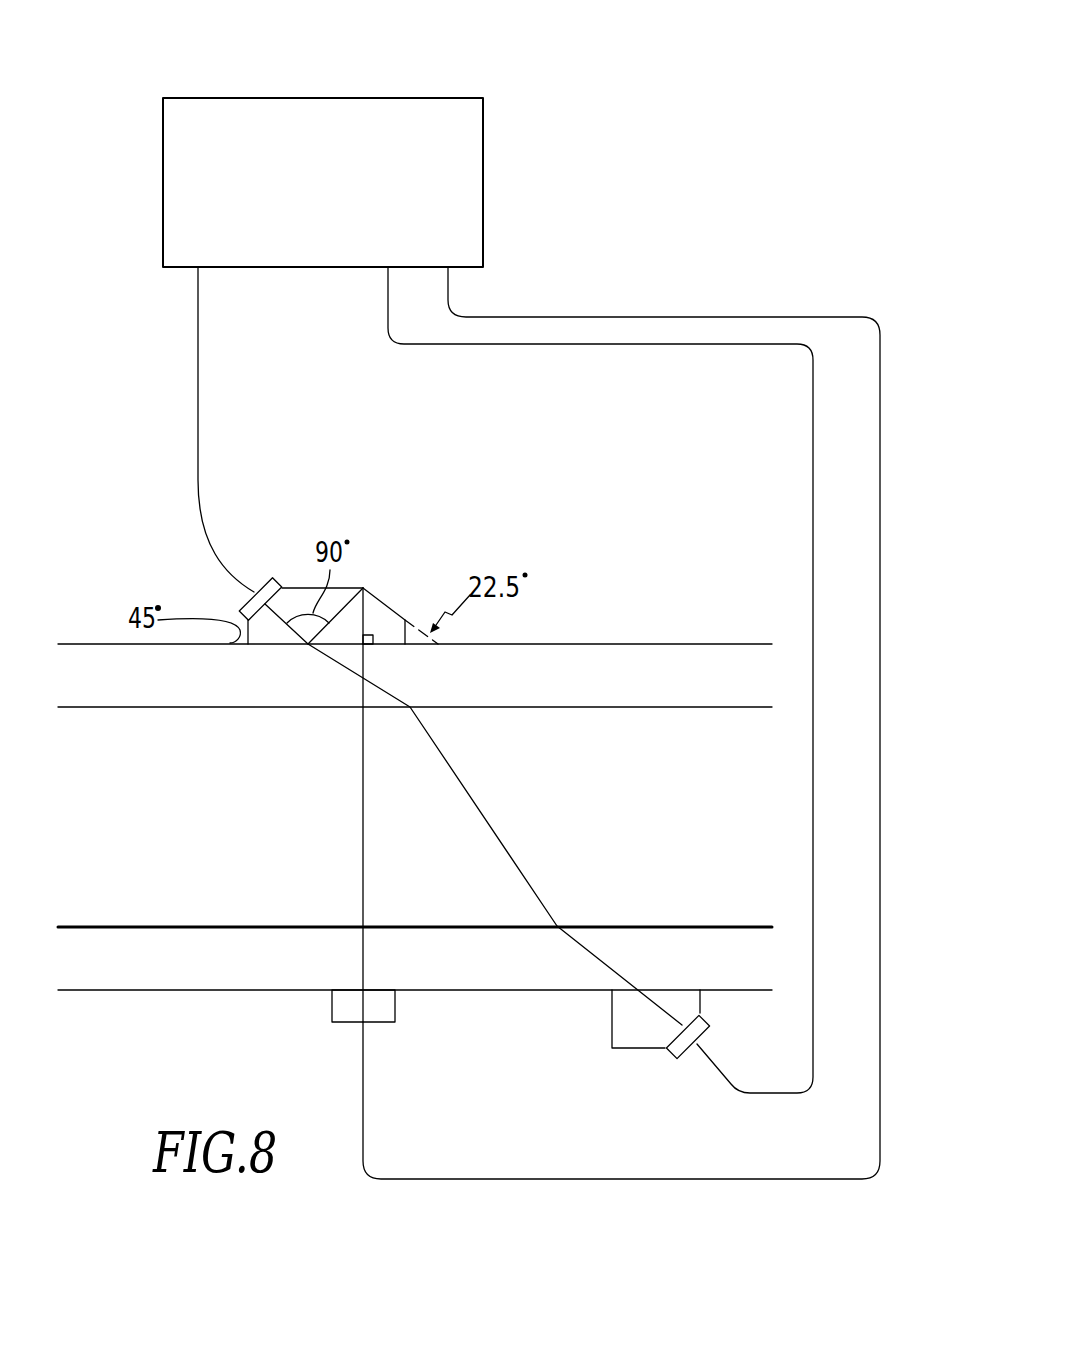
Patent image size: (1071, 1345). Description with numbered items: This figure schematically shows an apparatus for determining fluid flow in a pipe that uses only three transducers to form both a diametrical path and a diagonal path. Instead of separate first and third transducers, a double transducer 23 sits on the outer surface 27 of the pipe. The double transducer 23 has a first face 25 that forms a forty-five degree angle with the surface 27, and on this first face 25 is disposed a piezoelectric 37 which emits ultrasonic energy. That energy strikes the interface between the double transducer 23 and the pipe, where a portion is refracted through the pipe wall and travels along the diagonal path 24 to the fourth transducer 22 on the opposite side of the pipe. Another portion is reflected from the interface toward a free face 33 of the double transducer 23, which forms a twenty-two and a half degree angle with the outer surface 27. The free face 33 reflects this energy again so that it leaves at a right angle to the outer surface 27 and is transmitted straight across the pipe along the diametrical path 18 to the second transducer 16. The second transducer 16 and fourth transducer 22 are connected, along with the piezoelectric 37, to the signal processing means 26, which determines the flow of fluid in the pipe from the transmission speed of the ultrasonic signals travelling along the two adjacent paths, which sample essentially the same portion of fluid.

The signal processing means 26 is at (365, 95).
The outer surface of the pipe 27 is at (102, 643).
The piezoelectric 37 is at (240, 607).
The first face 25 is at (253, 620).
The double transducer 23 is at (291, 574).
The free face 33 is at (387, 602).
The diagonal path 24 is at (490, 826).
The diametrical path 18 is at (362, 832).
The second transducer 16 is at (342, 1025).
The fourth transducer 22 is at (612, 1035).